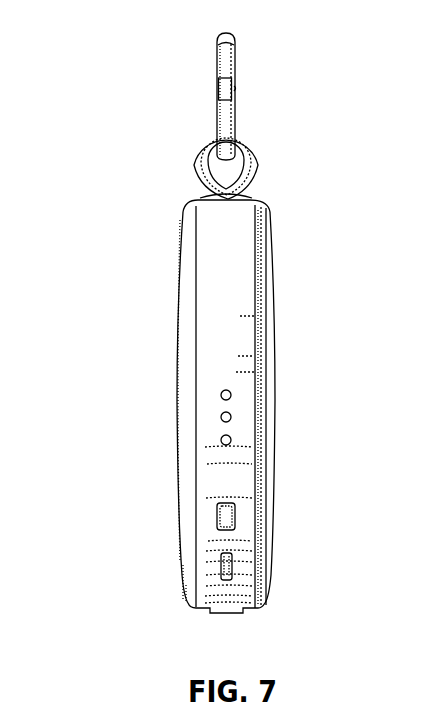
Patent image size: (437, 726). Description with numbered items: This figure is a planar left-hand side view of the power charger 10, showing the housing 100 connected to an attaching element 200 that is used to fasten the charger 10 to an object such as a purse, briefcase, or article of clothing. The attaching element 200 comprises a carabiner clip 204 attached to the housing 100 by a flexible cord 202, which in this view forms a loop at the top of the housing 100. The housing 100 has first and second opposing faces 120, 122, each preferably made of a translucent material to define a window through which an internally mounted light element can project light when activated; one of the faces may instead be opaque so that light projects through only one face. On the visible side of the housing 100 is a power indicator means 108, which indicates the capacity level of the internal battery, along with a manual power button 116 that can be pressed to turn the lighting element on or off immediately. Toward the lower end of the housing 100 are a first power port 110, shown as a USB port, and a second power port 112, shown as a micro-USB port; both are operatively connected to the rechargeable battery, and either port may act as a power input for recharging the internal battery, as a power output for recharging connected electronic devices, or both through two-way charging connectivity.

The charger 10 is at (115, 171).
The attaching element 200 is at (188, 118).
The carabiner clip 204 is at (233, 37).
The flexible cord 202 is at (262, 152).
The housing 100 is at (232, 292).
The first face 120 is at (277, 312).
The second face 122 is at (177, 475).
The power indicator means 108 is at (216, 400).
The manual power button 116 is at (242, 506).
The second power port 112 is at (242, 575).
The first power port 110 is at (224, 616).